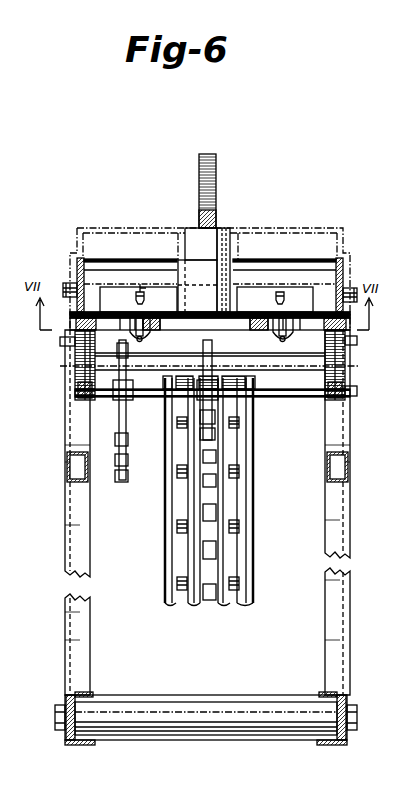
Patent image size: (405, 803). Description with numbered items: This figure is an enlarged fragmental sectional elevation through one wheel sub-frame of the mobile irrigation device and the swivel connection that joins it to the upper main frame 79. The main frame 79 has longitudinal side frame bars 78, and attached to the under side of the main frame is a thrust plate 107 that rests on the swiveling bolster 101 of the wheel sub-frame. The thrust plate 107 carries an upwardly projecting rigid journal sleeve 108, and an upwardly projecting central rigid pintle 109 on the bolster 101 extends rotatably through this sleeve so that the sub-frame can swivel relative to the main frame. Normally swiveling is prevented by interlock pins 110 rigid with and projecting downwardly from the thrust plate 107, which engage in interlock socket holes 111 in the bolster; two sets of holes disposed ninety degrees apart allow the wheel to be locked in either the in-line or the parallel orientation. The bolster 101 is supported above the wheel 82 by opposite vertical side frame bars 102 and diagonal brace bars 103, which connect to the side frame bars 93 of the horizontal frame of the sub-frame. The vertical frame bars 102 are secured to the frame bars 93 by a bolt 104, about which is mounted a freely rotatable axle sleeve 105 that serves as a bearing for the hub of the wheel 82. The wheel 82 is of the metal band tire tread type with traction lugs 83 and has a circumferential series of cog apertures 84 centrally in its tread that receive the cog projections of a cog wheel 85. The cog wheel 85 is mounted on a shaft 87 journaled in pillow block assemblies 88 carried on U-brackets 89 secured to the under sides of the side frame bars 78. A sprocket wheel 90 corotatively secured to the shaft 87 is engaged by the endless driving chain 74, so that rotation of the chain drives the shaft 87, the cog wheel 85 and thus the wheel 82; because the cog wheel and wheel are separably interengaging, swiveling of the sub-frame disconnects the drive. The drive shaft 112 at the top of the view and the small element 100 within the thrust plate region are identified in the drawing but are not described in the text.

The drive shaft 112 is at (216, 170).
The journal sleeve 108 is at (197, 267).
The pintle 109 is at (222, 232).
The main frame 79 is at (293, 258).
The side frame bar 78 is at (77, 270).
The thrust plate 107 is at (117, 318).
The pin 100 is at (150, 326).
The bolster 101 is at (250, 320).
The interlock pin 110 is at (286, 290).
The interlock socket hole 111 is at (150, 334).
The U-bracket 89 is at (78, 362).
The pillow block assembly 88 is at (80, 398).
The shaft 87 is at (153, 396).
The sprocket wheel 90 is at (120, 410).
The driving chain 74 is at (128, 466).
The cog wheel 85 is at (212, 417).
The diagonal brace bar 103 is at (66, 470).
The cog aperture 84 is at (203, 510).
The traction lug 83 is at (178, 524).
The wheel 82 is at (255, 548).
The vertical side frame bar 102 is at (67, 613).
The side frame bar 93 is at (93, 697).
The bolt 104 is at (358, 716).
The axle sleeve 105 is at (244, 728).